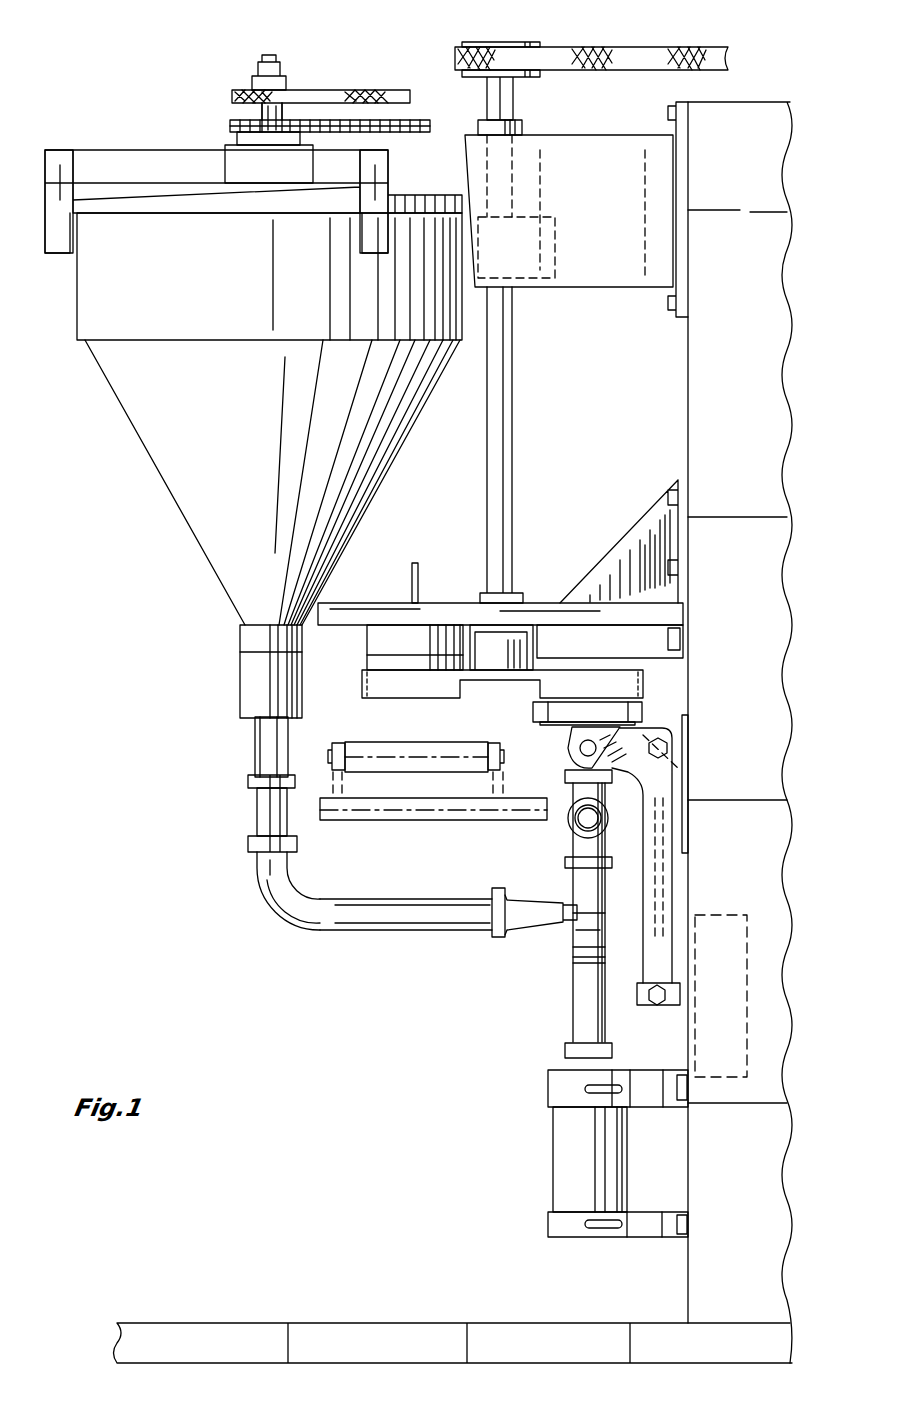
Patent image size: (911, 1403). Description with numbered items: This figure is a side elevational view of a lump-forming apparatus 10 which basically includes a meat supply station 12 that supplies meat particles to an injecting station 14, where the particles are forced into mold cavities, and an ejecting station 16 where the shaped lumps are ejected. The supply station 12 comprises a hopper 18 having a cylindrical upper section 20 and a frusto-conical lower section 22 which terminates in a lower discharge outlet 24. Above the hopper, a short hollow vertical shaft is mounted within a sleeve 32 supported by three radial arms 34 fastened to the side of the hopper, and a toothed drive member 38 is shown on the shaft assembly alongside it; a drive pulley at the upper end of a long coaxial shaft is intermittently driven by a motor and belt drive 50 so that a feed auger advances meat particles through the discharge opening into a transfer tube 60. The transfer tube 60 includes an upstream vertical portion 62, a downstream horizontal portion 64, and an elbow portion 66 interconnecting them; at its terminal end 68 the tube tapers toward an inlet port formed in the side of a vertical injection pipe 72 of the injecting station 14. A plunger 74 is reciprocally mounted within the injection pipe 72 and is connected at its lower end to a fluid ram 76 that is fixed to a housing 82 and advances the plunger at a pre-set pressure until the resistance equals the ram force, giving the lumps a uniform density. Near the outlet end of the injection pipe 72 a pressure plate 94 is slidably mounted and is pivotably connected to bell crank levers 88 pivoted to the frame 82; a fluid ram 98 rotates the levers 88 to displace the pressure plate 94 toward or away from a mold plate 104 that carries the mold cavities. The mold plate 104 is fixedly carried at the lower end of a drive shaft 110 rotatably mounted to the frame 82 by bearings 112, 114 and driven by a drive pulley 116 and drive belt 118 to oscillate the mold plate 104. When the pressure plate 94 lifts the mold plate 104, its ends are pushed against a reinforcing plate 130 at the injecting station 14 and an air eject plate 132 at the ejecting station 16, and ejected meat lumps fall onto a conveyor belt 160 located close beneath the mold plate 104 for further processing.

The lump-forming apparatus 10 is at (418, 80).
The meat supply station 12 is at (200, 565).
The injecting station 14 is at (552, 754).
The ejecting station 16 is at (372, 702).
The hopper 18 is at (180, 512).
The cylindrical upper section 20 is at (77, 290).
The frusto-conical lower section 22 is at (110, 388).
The lower discharge outlet 24 is at (240, 641).
The sleeve 32 is at (235, 160).
The radial arms 34 is at (104, 160).
The gear 38 is at (408, 122).
The motor and belt drive 50 is at (328, 90).
The transfer tube 60 is at (257, 812).
The upstream vertical portion 62 is at (253, 752).
The downstream horizontal portion 64 is at (450, 932).
The elbow portion 66 is at (290, 925).
The terminal end 68 is at (545, 900).
The vertical injection pipe 72 is at (600, 1024).
The plunger 74 is at (580, 945).
The fluid ram 76 is at (565, 1158).
The fixed housing 82 is at (703, 362).
The bell crank levers 88 is at (672, 880).
The pressure plate 94 is at (642, 710).
The fluid ram 98 is at (748, 1015).
The mold plate 104 is at (444, 688).
The drive shaft 110 is at (513, 477).
The bearing 112 is at (525, 127).
The bearing 114 is at (487, 600).
The drive pulley 116 is at (515, 43).
The drive belt 118 is at (672, 47).
The reinforcing plate 130 is at (650, 636).
The air eject plate 132 is at (380, 648).
The conveyor belt 160 is at (430, 782).